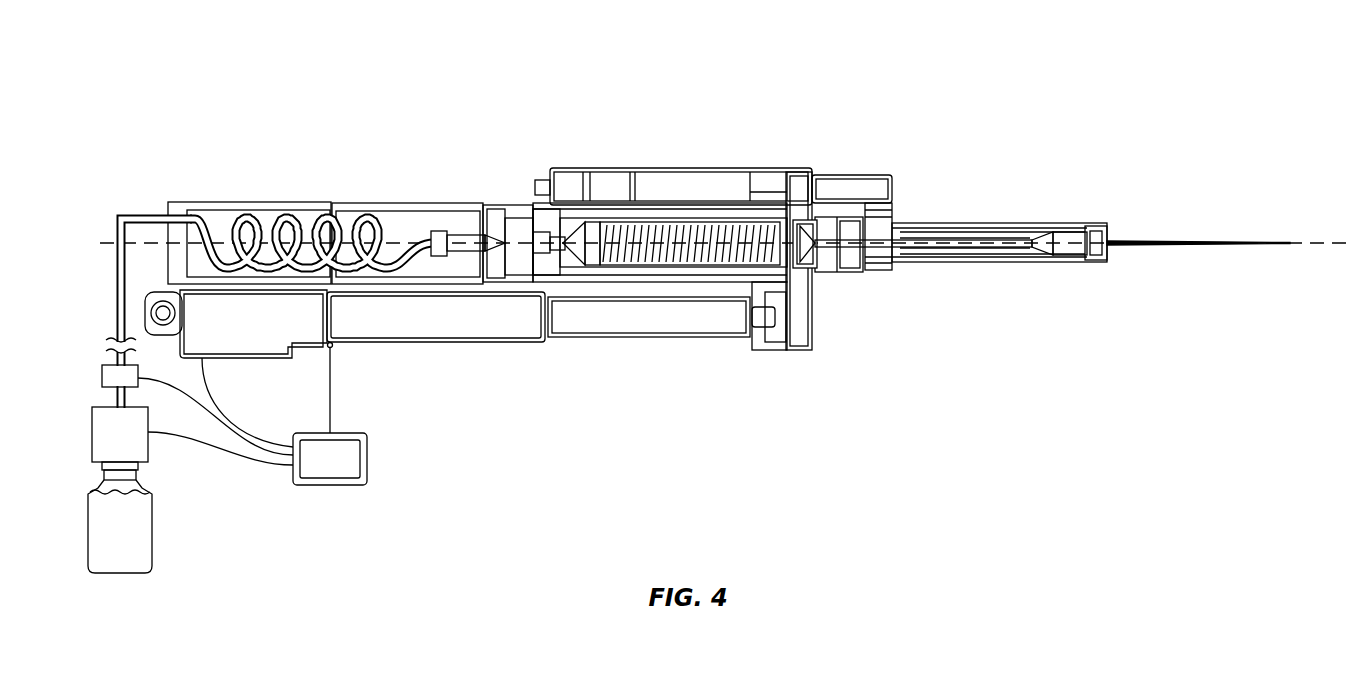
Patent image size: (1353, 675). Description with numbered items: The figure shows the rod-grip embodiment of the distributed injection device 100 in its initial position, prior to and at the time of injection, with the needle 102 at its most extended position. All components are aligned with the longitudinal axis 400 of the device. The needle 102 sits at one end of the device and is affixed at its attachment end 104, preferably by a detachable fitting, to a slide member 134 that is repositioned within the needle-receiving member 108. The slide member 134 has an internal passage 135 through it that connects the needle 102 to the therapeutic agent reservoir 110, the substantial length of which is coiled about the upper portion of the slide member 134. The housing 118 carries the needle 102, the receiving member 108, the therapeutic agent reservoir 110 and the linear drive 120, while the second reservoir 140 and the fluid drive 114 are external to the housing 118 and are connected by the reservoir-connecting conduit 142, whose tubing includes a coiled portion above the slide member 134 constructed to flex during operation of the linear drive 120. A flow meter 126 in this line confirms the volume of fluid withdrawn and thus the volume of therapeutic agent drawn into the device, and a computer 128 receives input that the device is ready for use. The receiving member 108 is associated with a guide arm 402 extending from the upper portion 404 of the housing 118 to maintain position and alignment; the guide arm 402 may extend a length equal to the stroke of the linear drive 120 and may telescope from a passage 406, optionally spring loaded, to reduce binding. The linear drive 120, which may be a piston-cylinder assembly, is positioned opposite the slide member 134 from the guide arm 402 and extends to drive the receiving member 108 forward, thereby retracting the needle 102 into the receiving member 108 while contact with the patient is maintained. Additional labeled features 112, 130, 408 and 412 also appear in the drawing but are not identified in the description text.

The distributed injection device 100 is at (995, 58).
The needle 102 is at (1197, 247).
The attachment end 104 is at (1045, 235).
The needle-receiving member 108 is at (1015, 262).
The therapeutic agent reservoir 110 is at (635, 275).
The outer tube 112 is at (905, 230).
The fluid drive 114 is at (92, 412).
The housing 118 is at (222, 204).
The linear drive 120 is at (435, 320).
The flow meter 126 is at (102, 372).
The computer 128 is at (350, 485).
The motor housing 130 is at (328, 348).
The slide member 134 is at (938, 255).
The internal passage 135 is at (973, 232).
The second reservoir 140 is at (90, 490).
The reservoir-connecting conduit 142 is at (117, 320).
The longitudinal axis 400 is at (1308, 247).
The guide arm 402 is at (853, 188).
The upper portion 404 is at (455, 205).
The passage 406 is at (672, 190).
The tubing housing section 408 is at (372, 205).
The coiled tubing 412 is at (284, 218).